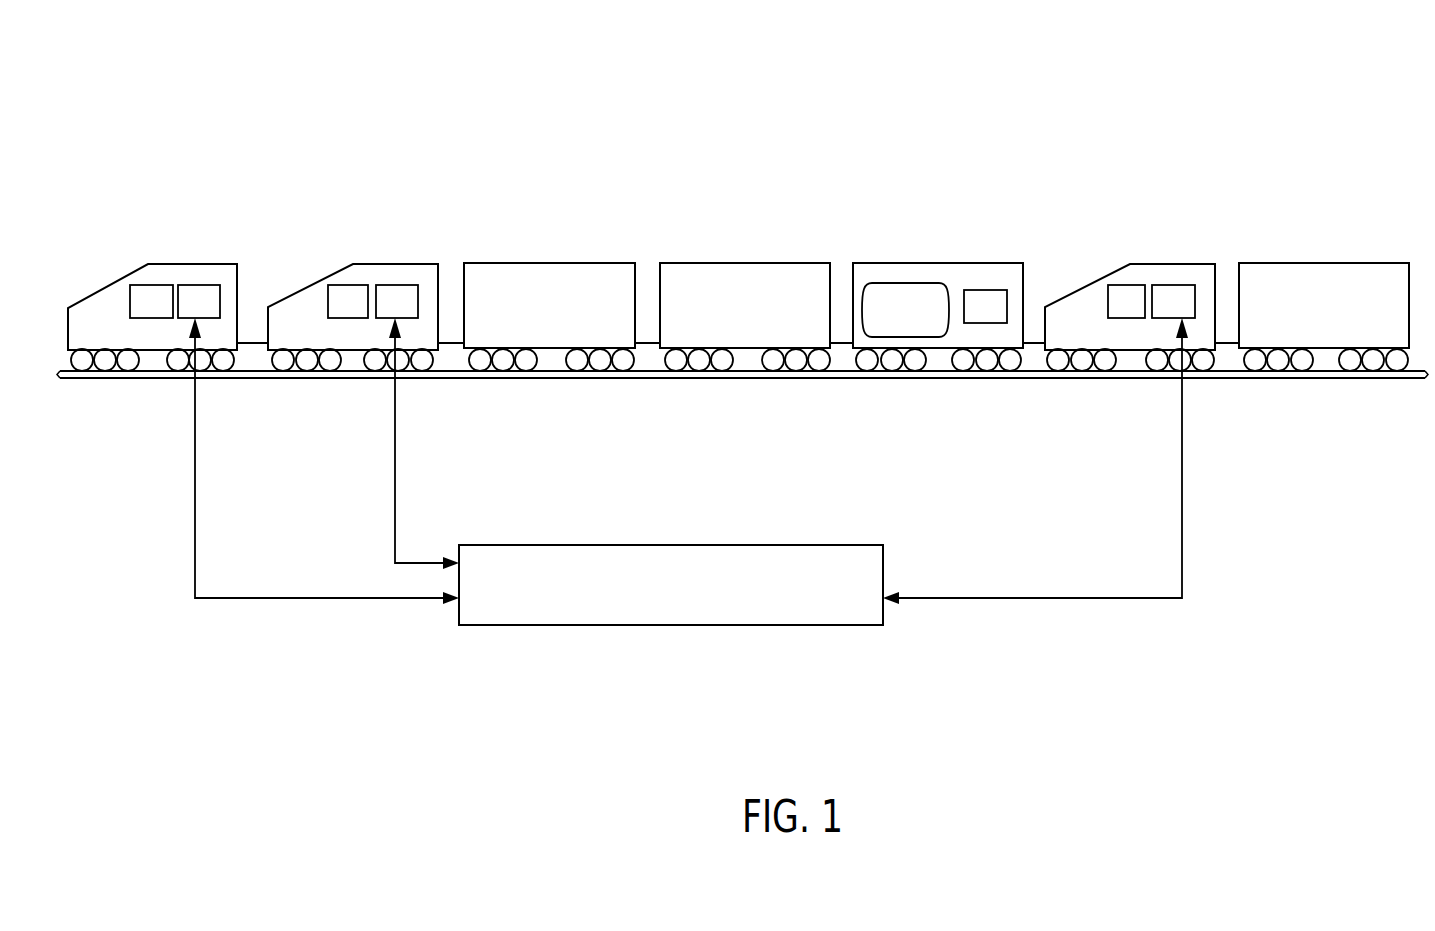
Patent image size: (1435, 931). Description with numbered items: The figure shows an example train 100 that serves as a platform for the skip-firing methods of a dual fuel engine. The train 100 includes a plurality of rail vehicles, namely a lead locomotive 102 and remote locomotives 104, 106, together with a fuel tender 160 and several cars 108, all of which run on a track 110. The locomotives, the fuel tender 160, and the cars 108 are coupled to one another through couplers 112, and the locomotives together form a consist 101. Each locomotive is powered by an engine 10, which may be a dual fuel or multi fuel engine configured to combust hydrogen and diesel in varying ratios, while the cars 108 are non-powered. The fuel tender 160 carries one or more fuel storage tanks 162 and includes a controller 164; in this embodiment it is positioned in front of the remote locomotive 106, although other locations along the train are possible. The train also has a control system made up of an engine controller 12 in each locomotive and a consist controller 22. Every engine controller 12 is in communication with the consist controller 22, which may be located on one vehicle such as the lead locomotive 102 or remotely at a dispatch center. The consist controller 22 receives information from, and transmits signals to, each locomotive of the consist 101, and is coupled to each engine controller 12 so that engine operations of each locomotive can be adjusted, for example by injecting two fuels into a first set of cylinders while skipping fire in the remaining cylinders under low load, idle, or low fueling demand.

The train 100 is at (1183, 62).
The consist 101 is at (255, 207).
The lead locomotive 102 is at (177, 263).
The remote locomotive 104 is at (390, 263).
The remote locomotive 106 is at (1145, 263).
The cars 108 is at (550, 263).
The track 110 is at (1353, 378).
The couplers 112 is at (250, 345).
The fuel tender 160 is at (915, 263).
The fuel storage tanks 162 is at (905, 310).
The controller 164 is at (985, 306).
The engine 10 is at (637, 301).
The engine controller 12 is at (686, 301).
The consist controller 22 is at (688, 471).